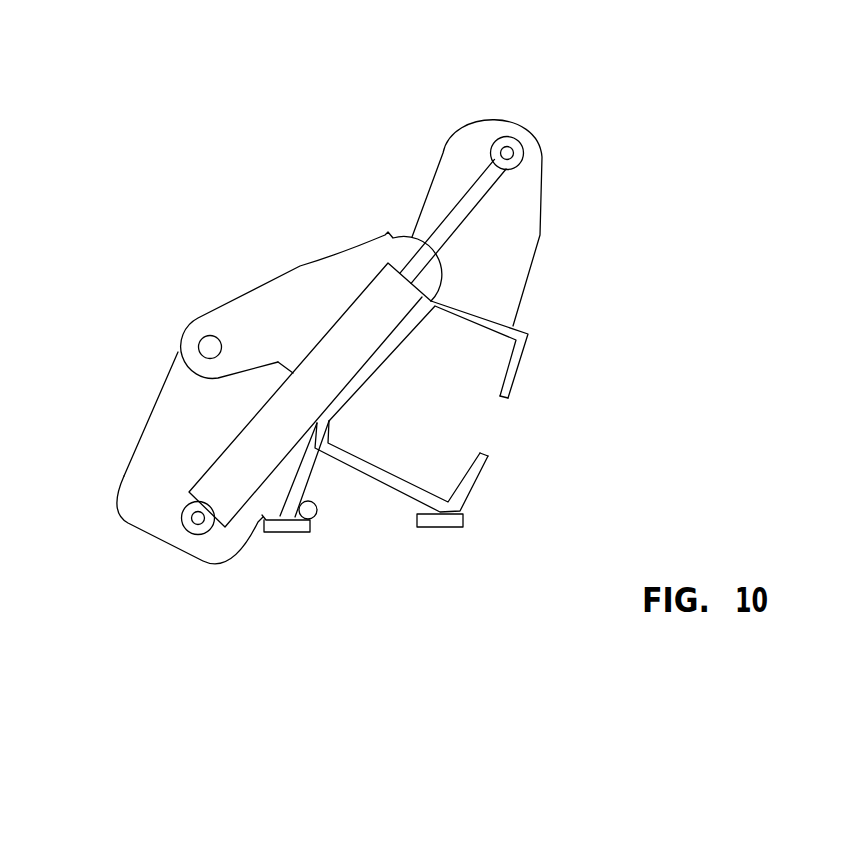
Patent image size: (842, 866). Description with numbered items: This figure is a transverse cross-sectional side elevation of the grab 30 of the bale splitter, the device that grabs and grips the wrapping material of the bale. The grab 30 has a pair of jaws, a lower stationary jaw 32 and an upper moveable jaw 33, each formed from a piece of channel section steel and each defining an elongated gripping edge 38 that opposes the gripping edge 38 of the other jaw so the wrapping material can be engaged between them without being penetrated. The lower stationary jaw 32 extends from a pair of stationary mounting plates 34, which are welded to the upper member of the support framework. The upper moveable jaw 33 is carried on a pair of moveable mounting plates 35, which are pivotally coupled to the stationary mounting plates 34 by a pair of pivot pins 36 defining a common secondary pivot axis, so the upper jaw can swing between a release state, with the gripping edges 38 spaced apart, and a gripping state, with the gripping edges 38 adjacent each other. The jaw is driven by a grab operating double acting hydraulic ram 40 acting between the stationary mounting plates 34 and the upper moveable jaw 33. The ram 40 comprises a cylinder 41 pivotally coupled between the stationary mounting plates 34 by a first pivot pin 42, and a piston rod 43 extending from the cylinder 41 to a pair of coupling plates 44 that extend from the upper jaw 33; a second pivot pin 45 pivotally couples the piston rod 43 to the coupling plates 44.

The grab 30 is at (600, 256).
The lower stationary jaw 32 is at (477, 487).
The upper moveable jaw 33 is at (520, 377).
The stationary mounting plates 34 is at (153, 472).
The moveable mounting plates 35 is at (312, 283).
The pivot pins 36 is at (204, 336).
The gripping edge 38 is at (502, 400).
The grab operating double acting hydraulic ram 40 is at (311, 370).
The cylinder 41 is at (257, 430).
The first pivot pin 42 is at (198, 518).
The piston rod 43 is at (472, 200).
The coupling plates 44 is at (513, 225).
The second pivot pin 45 is at (517, 140).